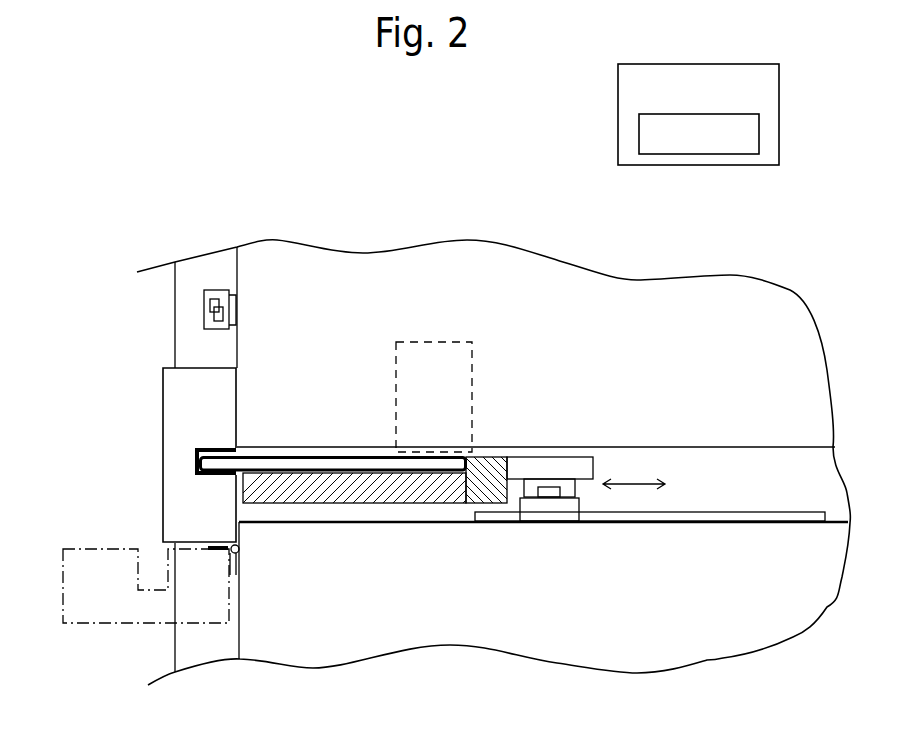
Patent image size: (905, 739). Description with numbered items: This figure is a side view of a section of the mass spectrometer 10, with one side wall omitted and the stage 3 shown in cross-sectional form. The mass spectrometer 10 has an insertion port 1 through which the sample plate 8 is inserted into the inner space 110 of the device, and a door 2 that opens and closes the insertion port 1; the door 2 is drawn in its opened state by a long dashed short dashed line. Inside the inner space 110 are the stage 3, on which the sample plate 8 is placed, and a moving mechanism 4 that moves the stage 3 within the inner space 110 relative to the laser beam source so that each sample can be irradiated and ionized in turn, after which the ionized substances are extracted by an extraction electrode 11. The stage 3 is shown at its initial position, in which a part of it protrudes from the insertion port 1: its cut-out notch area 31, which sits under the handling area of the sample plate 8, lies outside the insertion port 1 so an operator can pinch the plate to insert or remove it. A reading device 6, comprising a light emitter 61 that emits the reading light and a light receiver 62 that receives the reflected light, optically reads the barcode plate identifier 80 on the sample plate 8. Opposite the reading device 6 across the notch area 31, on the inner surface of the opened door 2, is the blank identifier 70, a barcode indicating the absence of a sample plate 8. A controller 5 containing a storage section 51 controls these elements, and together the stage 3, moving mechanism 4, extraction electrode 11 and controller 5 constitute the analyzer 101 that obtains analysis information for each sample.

The mass spectrometer 10 is at (117, 149).
The insertion port 1 is at (200, 488).
The door 2 is at (163, 392).
The stage 3 is at (335, 502).
The notch area 31 is at (219, 508).
The moving mechanism 4 is at (616, 454).
The controller 5 is at (618, 100).
The storage section 51 is at (685, 154).
The reading device 6 is at (204, 295).
The light emitter 61 is at (210, 305).
The light receiver 62 is at (214, 319).
The sample plate 8 is at (282, 457).
The plate identifier 80 is at (217, 457).
The blank identifier 70 is at (215, 546).
The extraction electrode 11 is at (477, 362).
The analyzer 101 is at (528, 563).
The inner space 110 is at (745, 486).